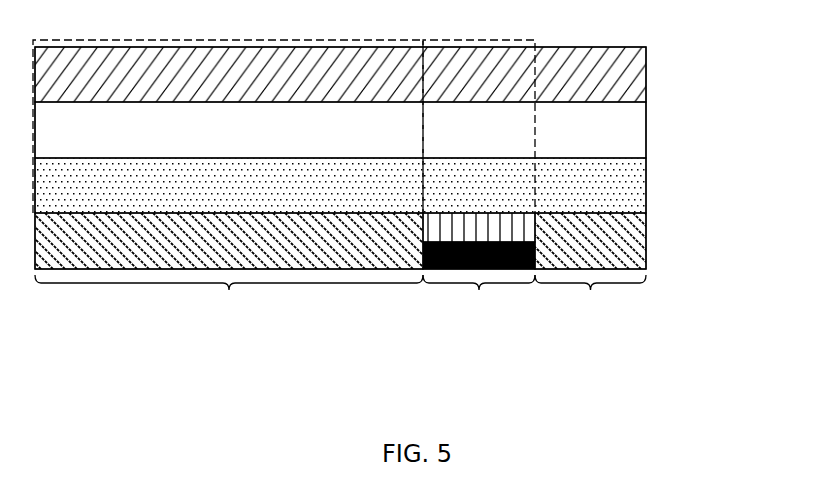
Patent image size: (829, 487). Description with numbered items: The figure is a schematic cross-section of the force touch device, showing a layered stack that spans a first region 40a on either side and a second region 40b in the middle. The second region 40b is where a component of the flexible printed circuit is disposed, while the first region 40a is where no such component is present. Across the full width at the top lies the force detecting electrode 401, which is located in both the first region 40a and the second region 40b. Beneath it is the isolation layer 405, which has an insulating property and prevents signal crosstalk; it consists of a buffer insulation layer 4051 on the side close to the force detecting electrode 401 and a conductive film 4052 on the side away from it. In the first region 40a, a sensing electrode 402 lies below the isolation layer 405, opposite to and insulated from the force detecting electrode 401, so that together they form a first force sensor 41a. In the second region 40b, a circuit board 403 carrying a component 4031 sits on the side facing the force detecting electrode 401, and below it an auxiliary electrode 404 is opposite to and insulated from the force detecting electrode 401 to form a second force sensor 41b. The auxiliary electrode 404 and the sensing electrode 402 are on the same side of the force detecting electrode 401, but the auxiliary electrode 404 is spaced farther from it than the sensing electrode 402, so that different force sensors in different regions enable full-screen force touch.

The force detecting electrode 401 is at (618, 75).
The isolation layer 405 is at (410, 157).
The buffer insulation layer 4051 is at (618, 130).
The conductive film 4052 is at (618, 186).
The circuit board 403 is at (595, 227).
The component 4031 is at (520, 222).
The sensing electrode 402 is at (618, 241).
The auxiliary electrode 404 is at (618, 260).
The first force sensor 41a is at (242, 40).
The second force sensor 41b is at (465, 40).
The first region 40a is at (340, 297).
The second region 40b is at (479, 297).